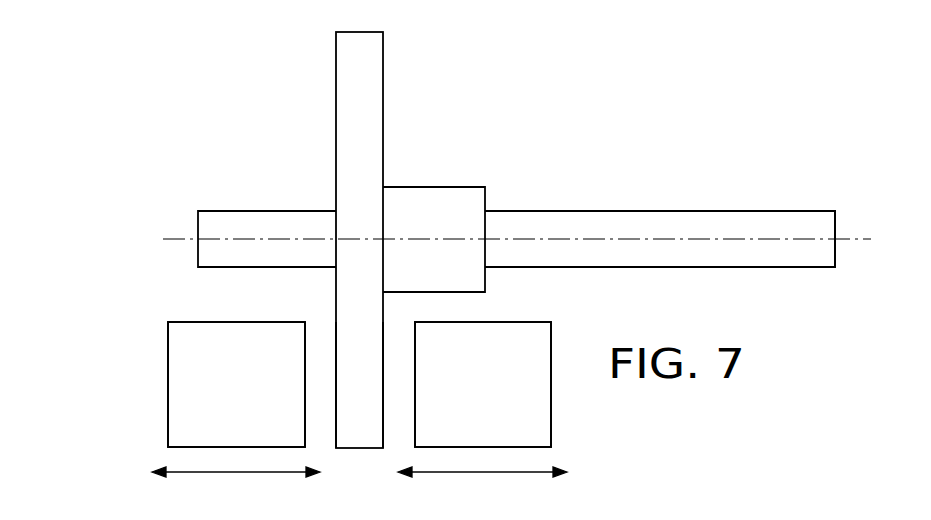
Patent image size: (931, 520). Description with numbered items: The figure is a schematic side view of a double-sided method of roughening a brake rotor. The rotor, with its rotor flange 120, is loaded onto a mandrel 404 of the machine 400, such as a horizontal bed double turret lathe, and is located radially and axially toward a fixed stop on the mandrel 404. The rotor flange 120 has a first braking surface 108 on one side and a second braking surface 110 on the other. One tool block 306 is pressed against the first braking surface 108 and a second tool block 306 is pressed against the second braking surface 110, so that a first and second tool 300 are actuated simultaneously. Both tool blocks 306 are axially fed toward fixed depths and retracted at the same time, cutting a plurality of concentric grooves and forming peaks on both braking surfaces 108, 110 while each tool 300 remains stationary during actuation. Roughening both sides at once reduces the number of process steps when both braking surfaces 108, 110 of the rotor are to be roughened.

The rotor flange 120 is at (383, 108).
The machine 400 is at (663, 211).
The mandrel 404 is at (660, 239).
The tool block 306 is at (168, 384).
The tool 300 is at (359, 384).
The second braking surface 110 is at (336, 415).
The first braking surface 108 is at (383, 415).